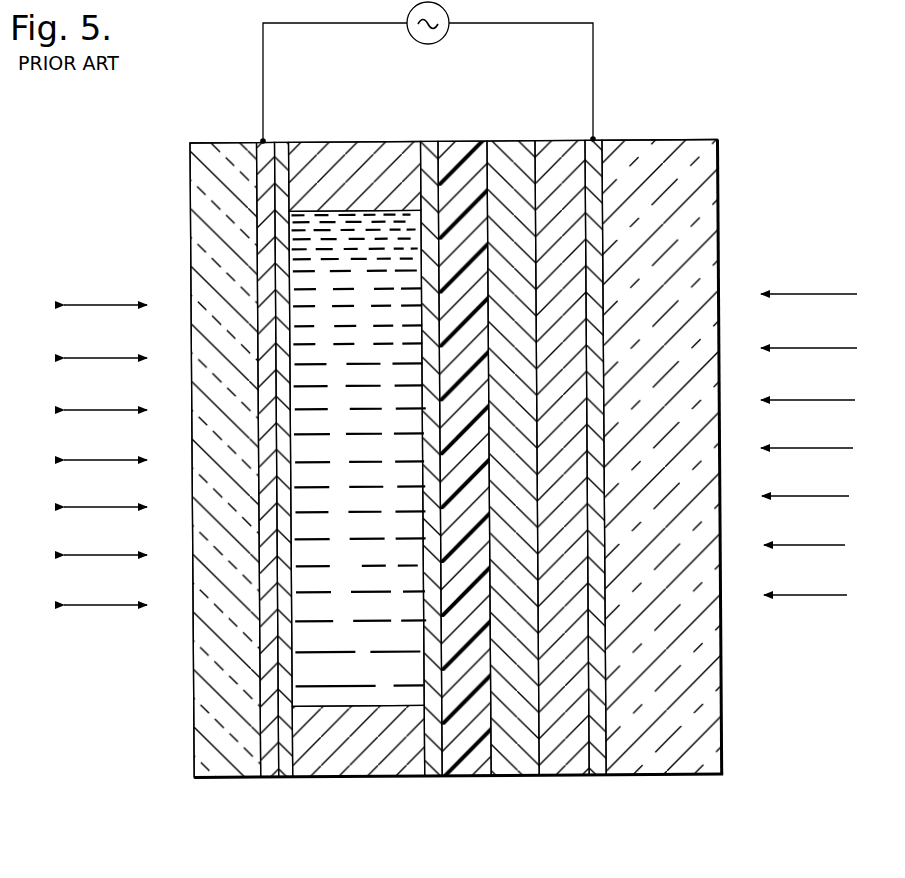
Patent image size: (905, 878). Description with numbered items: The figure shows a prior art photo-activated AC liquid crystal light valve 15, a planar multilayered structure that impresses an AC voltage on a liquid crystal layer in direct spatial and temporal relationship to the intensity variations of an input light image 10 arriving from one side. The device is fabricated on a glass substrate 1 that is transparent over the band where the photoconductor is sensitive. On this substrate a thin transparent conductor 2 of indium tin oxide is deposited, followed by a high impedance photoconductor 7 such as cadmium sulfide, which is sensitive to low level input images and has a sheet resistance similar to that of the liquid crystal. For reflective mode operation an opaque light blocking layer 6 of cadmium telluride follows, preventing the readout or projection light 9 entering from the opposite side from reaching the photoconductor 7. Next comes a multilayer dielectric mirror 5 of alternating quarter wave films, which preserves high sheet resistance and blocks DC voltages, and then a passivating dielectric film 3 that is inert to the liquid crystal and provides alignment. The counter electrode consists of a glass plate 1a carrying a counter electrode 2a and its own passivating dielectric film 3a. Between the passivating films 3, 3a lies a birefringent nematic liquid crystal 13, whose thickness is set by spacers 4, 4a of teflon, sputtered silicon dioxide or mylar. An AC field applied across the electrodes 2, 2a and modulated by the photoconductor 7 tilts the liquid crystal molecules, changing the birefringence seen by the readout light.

The glass substrate 1 is at (683, 147).
The glass plate 1a is at (192, 172).
The transparent conductor 2 is at (598, 151).
The counter electrode 2a is at (262, 141).
The passivating dielectric film 3 is at (433, 147).
The passivating dielectric film 3a is at (284, 146).
The spacer 4 is at (356, 188).
The spacer 4a is at (376, 754).
The multilayer dielectric mirror 5 is at (467, 147).
The opaque light blocking layer 6 is at (523, 148).
The photoconductor 7 is at (575, 147).
The readout or projection light 9 is at (94, 640).
The input light image 10 is at (838, 277).
The birefringent nematic liquid crystal 13 is at (359, 578).
The light valve 15 is at (259, 818).